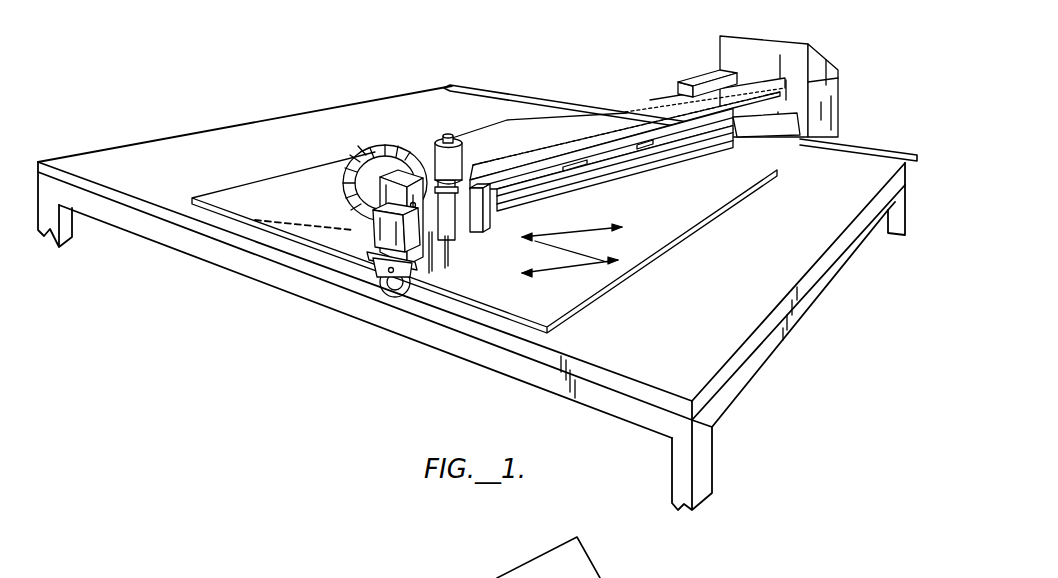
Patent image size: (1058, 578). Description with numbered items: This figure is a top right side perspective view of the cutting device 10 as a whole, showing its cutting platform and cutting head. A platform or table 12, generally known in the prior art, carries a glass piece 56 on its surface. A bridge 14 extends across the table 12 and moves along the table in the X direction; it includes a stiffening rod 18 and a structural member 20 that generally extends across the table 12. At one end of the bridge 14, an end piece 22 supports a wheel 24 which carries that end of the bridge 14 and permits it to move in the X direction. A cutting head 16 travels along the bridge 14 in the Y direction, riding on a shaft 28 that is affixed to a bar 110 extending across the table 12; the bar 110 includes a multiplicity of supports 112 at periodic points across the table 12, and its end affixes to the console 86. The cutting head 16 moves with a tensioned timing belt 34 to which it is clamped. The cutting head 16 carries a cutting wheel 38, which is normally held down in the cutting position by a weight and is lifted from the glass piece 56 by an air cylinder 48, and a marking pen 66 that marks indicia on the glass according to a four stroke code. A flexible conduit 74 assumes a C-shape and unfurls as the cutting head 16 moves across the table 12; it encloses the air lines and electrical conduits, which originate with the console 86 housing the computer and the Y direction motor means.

The cutting device 10 is at (584, 192).
The table 12 is at (195, 150).
The bridge 14 is at (680, 112).
The cutting head 16 is at (397, 140).
The stiffening rod 18 is at (722, 140).
The structural member 20 is at (712, 84).
The end piece 22 is at (365, 234).
The wheel 24 is at (383, 296).
The shaft 28 is at (547, 158).
The timing belt 34 is at (468, 148).
The cutting wheel 38 is at (434, 266).
The air cylinder 48 is at (477, 216).
The glass piece 56 is at (565, 298).
The marking pen 66 is at (420, 294).
The flexible conduit 74 is at (352, 157).
The console 86 is at (820, 58).
The bar 110 is at (683, 140).
The supports 112 is at (642, 148).